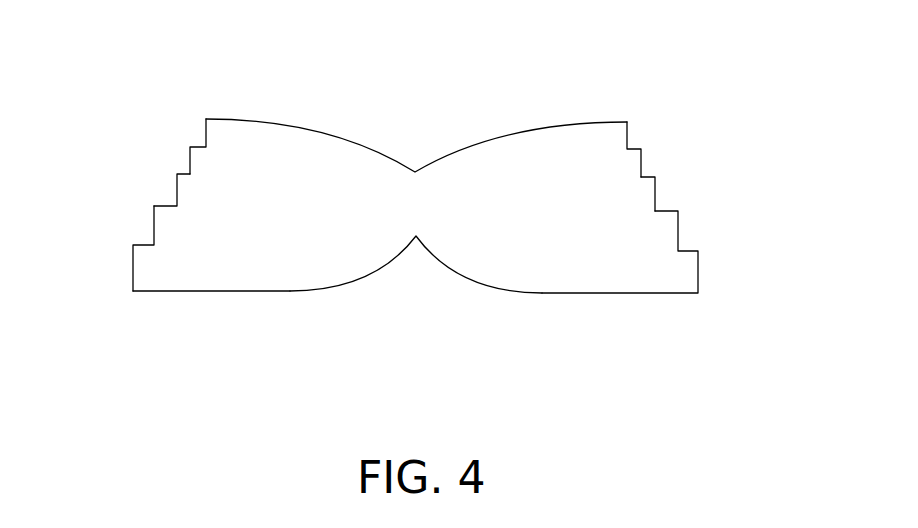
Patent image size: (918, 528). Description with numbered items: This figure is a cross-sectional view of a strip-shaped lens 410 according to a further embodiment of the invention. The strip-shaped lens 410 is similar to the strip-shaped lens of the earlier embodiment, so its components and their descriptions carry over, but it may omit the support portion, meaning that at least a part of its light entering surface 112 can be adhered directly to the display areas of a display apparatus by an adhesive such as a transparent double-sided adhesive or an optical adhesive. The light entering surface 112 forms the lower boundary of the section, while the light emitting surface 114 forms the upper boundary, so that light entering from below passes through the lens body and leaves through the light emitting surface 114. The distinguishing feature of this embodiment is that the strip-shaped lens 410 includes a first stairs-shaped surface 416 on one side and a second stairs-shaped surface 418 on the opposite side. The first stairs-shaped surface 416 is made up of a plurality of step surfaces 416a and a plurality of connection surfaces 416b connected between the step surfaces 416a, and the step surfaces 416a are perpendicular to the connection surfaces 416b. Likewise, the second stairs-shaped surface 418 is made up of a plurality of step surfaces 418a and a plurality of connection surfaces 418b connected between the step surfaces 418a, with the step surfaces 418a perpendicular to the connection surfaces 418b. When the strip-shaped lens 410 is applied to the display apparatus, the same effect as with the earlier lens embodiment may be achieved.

The light entering surface 112 is at (467, 278).
The light emitting surface 114 is at (468, 146).
The strip-shaped lens 410 is at (423, 211).
The first stairs-shaped surface 416 is at (126, 193).
The step surfaces 416a is at (204, 136).
The connection surfaces 416b is at (190, 163).
The second stairs-shaped surface 418 is at (707, 156).
The step surfaces 418a is at (629, 138).
The connection surfaces 418b is at (643, 166).